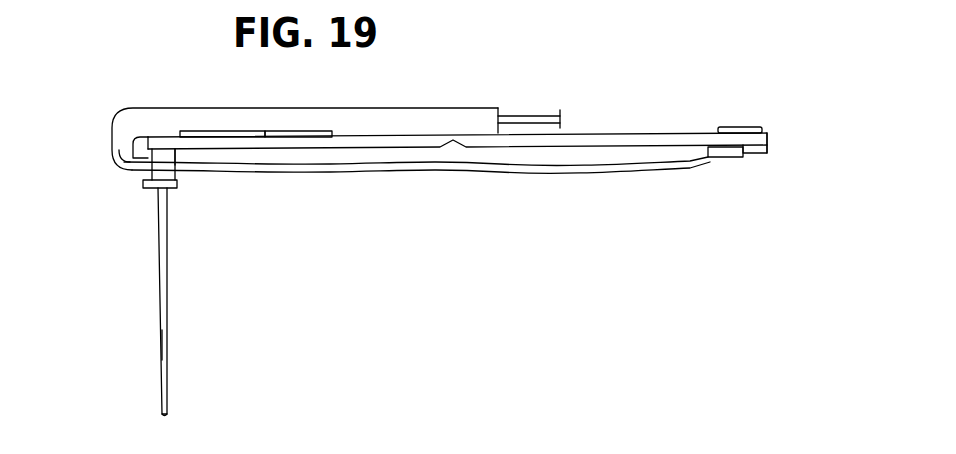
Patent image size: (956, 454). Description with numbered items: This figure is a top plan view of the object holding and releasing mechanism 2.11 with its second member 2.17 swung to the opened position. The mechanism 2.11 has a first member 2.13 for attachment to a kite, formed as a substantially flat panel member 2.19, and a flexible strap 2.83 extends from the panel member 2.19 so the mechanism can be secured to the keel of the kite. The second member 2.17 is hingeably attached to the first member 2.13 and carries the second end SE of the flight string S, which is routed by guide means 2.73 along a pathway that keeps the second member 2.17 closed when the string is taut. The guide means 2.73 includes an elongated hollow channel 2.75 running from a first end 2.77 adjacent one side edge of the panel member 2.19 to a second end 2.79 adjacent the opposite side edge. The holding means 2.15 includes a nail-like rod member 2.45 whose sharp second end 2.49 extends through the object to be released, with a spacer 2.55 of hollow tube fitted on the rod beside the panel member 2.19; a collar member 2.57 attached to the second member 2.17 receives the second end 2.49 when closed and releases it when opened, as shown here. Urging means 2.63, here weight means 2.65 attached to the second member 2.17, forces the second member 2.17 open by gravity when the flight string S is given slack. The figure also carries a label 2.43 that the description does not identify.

The object holding and releasing mechanism 2.11 is at (703, 67).
The guide means 2.73 is at (208, 90).
The second end 2.79 is at (113, 122).
The panel member 2.19 is at (398, 146).
The flexible strap 2.83 is at (204, 122).
The hollow channel 2.75 is at (308, 112).
The first end 2.77 is at (478, 115).
The flight string S is at (551, 125).
The collar member 2.57 is at (830, 120).
The urging means 2.63 is at (782, 147).
The weight means 2.65 is at (752, 155).
The second end SE is at (625, 173).
The first member 2.13 is at (349, 157).
The protrusion 2.43 is at (452, 158).
The second member 2.17 is at (572, 155).
The spacer 2.55 is at (148, 177).
The holding means 2.15 is at (138, 246).
The rod member 2.45 is at (250, 362).
The second end 2.49 is at (169, 405).